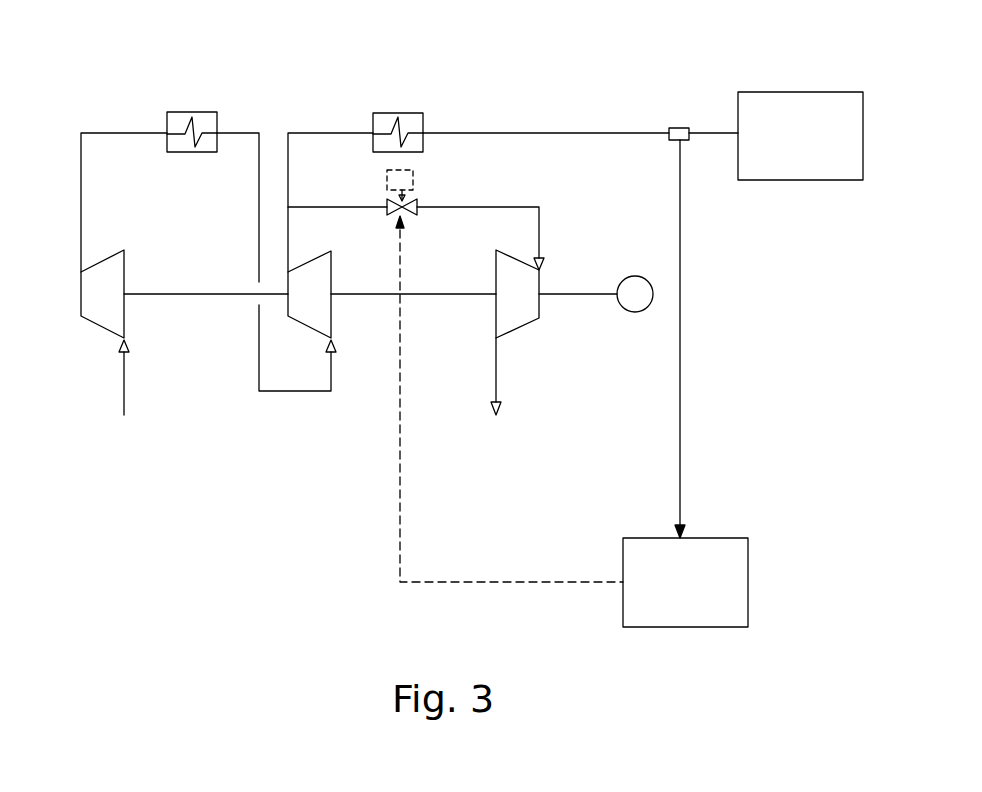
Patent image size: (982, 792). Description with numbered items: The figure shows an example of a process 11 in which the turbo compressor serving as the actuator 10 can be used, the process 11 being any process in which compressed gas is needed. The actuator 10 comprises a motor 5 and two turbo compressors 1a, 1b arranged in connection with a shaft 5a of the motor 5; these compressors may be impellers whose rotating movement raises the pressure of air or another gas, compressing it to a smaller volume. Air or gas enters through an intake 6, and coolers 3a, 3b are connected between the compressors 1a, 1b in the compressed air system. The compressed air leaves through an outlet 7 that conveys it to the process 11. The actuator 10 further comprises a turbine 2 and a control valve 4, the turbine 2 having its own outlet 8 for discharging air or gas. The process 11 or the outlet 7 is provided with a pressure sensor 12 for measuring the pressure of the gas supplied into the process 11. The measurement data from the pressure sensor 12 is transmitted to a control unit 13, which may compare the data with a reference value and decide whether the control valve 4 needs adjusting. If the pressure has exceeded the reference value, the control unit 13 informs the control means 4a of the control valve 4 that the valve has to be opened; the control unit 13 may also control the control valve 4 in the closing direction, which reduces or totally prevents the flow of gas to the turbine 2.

The actuator 10 is at (603, 63).
The turbo compressor 1a is at (81, 302).
The turbo compressor 1b is at (331, 318).
The turbine 2 is at (496, 315).
The cooler 3a is at (167, 143).
The cooler 3b is at (373, 143).
The control valve 4 is at (416, 212).
The control means 4a is at (413, 172).
The motor 5 is at (630, 276).
The shaft 5a is at (592, 296).
The intake 6 is at (124, 402).
The outlet 7 is at (633, 133).
The outlet 8 is at (491, 400).
The process 11 is at (800, 180).
The pressure sensor 12 is at (680, 128).
The control unit 13 is at (660, 627).